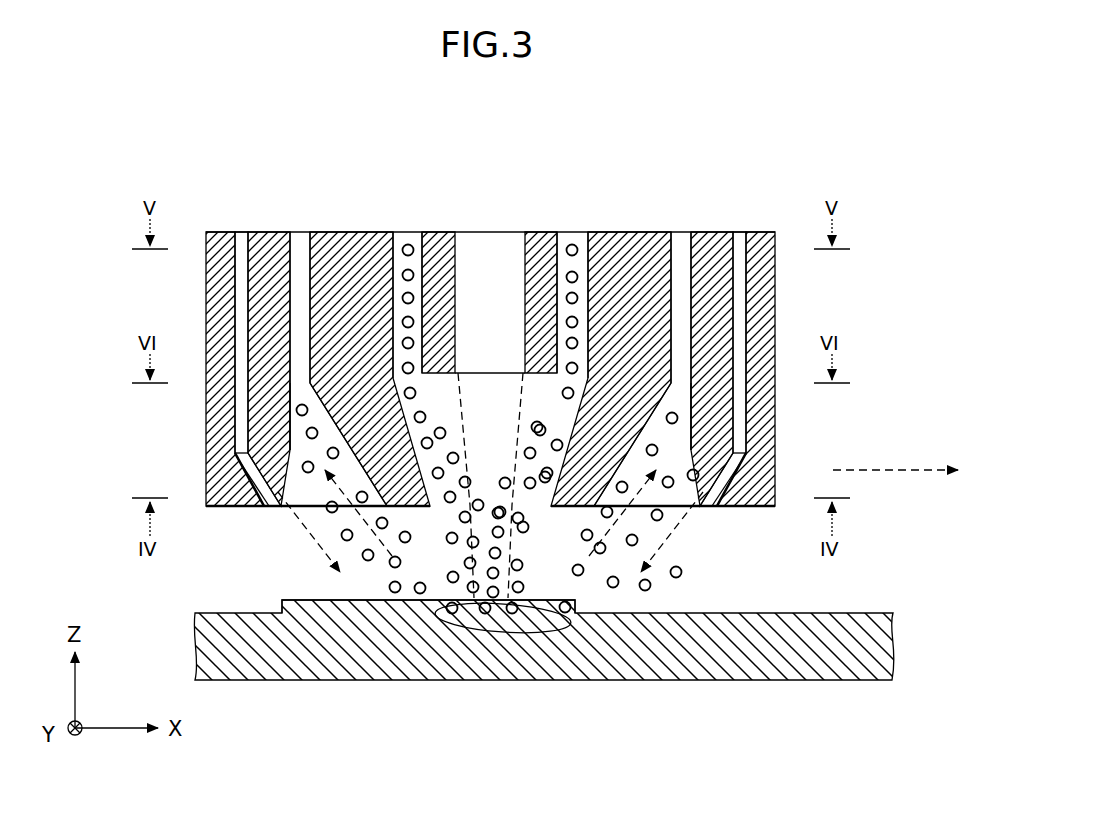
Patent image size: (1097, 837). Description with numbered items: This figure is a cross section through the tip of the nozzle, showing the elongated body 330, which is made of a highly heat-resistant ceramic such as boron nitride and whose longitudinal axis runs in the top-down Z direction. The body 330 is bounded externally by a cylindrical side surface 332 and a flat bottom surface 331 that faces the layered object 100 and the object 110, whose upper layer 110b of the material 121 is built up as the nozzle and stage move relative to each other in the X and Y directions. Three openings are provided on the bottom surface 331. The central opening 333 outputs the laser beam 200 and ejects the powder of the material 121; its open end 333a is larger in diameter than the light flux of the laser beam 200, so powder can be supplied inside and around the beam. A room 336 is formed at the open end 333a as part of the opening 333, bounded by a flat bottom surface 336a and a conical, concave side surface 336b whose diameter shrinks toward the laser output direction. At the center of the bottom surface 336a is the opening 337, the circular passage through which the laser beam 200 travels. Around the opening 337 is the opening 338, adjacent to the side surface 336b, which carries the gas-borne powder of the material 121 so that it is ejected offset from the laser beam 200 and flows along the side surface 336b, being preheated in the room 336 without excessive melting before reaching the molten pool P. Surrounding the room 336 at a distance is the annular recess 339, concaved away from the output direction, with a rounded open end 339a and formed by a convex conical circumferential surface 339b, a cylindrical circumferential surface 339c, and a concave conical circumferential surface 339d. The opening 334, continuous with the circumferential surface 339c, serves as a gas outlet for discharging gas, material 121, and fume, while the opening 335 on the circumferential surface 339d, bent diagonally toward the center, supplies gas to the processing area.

The body 330 is at (227, 230).
The side surface 332 is at (207, 272).
The opening 334 is at (298, 290).
The opening 335 is at (243, 312).
The room 336 is at (500, 405).
The opening 333 is at (584, 436).
The bottom surface 336a is at (455, 378).
The side surface 336b is at (562, 425).
The opening 337 is at (520, 236).
The opening 338 is at (405, 236).
The material 121 is at (403, 343).
The recess 339 is at (290, 467).
The open end 339a is at (262, 508).
The circumferential surface 339b is at (383, 492).
The circumferential surface 339c is at (298, 420).
The circumferential surface 339d is at (275, 510).
The bottom surface 331 is at (423, 507).
The open end 333a is at (547, 508).
The laser beam 200 is at (523, 543).
The molten pool P is at (533, 620).
The layered object 100 is at (855, 610).
The object 110 is at (393, 670).
The layer 110b is at (319, 601).